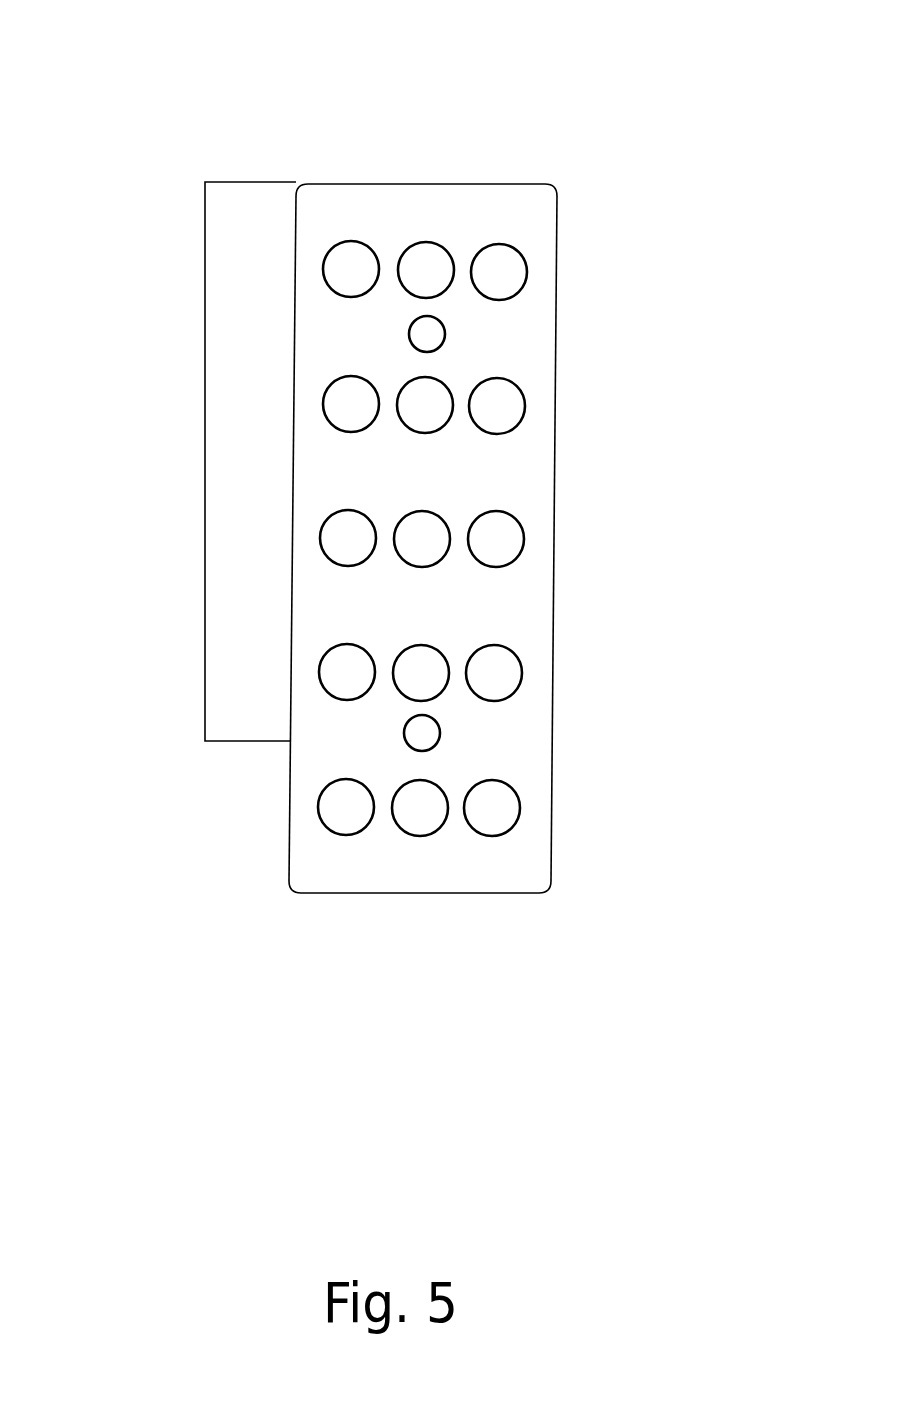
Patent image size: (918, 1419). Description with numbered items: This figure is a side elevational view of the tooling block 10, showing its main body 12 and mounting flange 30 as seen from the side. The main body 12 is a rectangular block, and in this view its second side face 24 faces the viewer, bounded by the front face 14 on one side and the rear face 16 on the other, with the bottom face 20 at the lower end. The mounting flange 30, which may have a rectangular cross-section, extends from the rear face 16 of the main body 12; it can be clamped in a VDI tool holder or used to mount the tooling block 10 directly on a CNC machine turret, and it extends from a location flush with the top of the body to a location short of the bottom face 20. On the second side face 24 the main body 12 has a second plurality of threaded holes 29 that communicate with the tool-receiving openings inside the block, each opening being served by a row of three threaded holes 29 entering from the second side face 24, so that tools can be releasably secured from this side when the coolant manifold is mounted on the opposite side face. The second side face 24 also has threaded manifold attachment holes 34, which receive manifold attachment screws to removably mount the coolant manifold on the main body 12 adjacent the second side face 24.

The tooling block 10 is at (398, 183).
The main body 12 is at (558, 191).
The front face 14 is at (553, 582).
The rear face 16 is at (288, 817).
The bottom face 20 is at (453, 895).
The second side face 24 is at (443, 613).
The threaded holes 29 is at (521, 403).
The mounting flange 30 is at (233, 741).
The threaded manifold attachment holes 34 is at (446, 338).